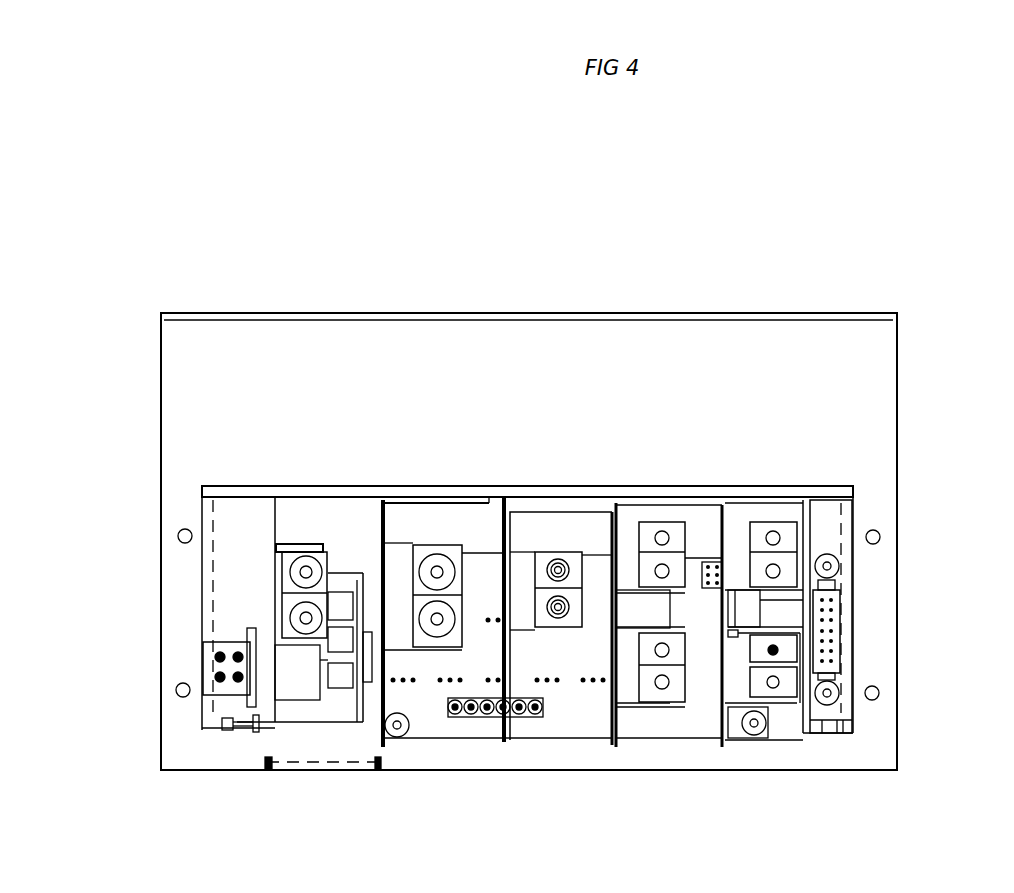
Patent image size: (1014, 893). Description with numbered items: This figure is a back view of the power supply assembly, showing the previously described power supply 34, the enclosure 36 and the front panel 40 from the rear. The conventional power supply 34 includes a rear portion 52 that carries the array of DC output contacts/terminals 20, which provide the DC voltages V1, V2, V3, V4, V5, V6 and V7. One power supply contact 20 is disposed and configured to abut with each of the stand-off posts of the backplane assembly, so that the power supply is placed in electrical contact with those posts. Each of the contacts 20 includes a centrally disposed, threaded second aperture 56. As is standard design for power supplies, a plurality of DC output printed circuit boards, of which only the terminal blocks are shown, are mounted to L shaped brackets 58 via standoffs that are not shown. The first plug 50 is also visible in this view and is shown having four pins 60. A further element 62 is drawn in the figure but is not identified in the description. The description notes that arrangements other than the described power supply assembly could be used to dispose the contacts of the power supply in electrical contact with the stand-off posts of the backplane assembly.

The DC output contacts/terminals 20 is at (213, 481).
The power supply 34 is at (545, 740).
The enclosure 36 is at (818, 487).
The front panel 40 is at (823, 313).
The first plug 50 is at (167, 709).
The rear portion 52 is at (438, 692).
The threaded second aperture 56 is at (302, 560).
The L shaped brackets 58 is at (394, 500).
The pins 60 is at (238, 657).
The ribbon connector 62 is at (828, 662).
The DC voltage V1 is at (370, 452).
The DC voltage V2 is at (507, 501).
The DC voltage V3 is at (611, 502).
The DC voltage V4 is at (705, 495).
The DC voltage V5 is at (754, 498).
The DC voltage V6 is at (793, 750).
The DC voltage V7 is at (684, 749).